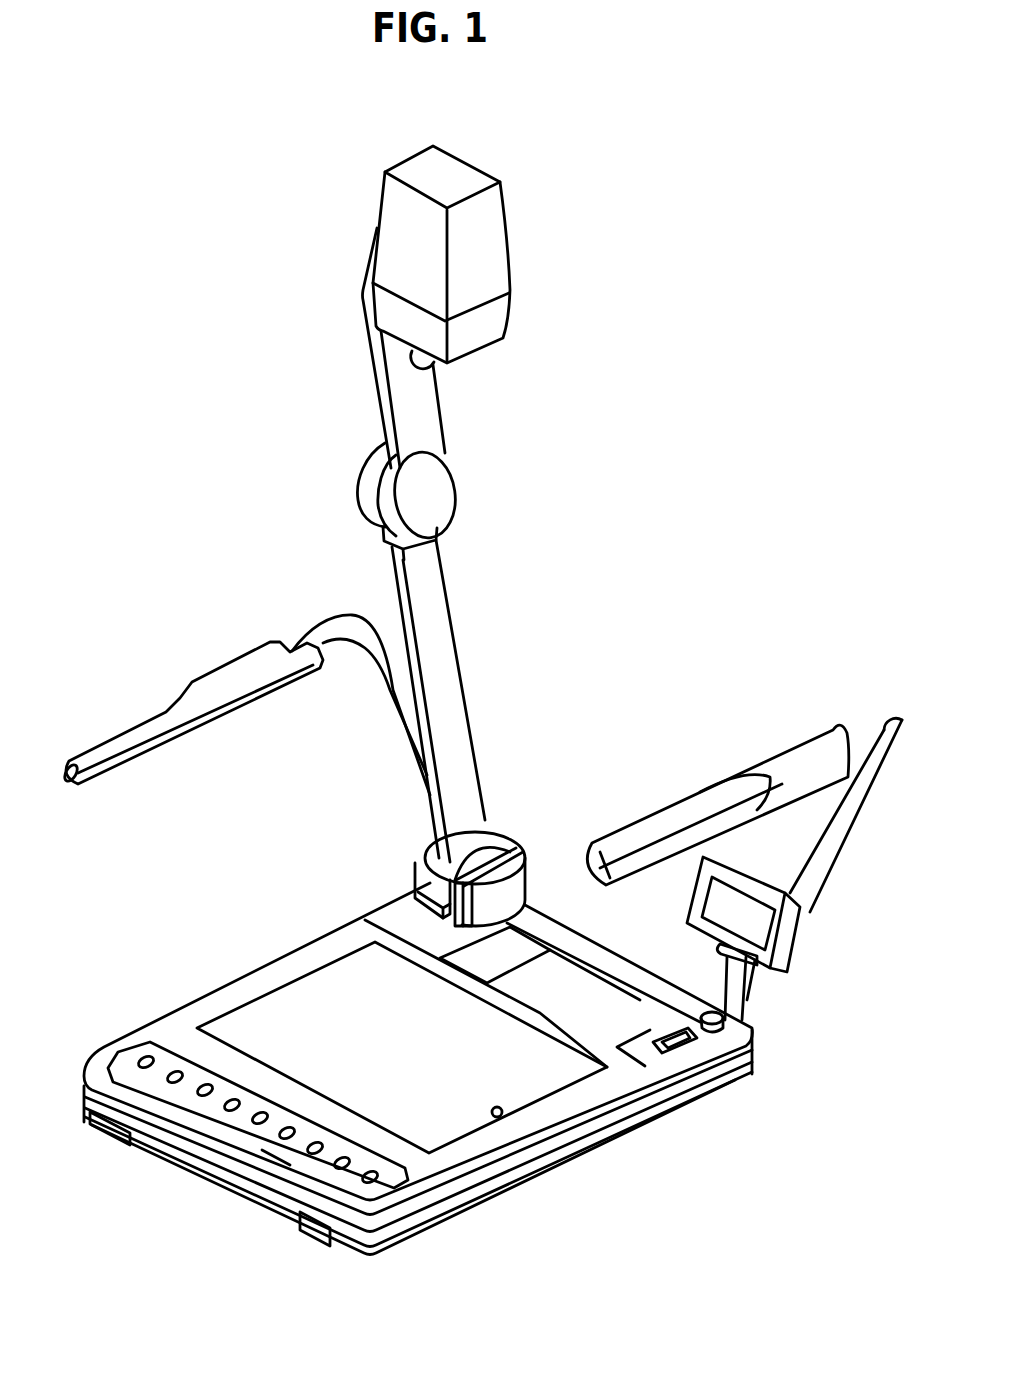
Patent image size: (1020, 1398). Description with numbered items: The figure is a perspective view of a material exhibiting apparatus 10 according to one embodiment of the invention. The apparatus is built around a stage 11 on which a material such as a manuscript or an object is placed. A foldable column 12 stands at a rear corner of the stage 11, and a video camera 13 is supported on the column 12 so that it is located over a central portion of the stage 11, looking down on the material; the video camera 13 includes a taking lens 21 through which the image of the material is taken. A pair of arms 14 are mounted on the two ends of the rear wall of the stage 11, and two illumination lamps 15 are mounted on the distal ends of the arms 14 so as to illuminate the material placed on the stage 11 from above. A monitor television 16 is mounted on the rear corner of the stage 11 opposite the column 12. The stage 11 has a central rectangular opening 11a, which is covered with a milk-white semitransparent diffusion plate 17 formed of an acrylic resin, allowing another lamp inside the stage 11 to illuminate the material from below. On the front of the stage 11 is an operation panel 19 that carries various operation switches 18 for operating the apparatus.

The material exhibiting apparatus 10 is at (659, 577).
The stage 11 is at (292, 965).
The central rectangular opening 11a is at (505, 1116).
The foldable column 12 is at (458, 658).
The video camera 13 is at (385, 213).
The arms 14 is at (397, 696).
The illumination lamps 15 is at (155, 725).
The monitor television 16 is at (803, 932).
The diffusion plate 17 is at (262, 1020).
The operation switches 18 is at (197, 1096).
The operation panel 19 is at (275, 1152).
The taking lens 21 is at (420, 357).